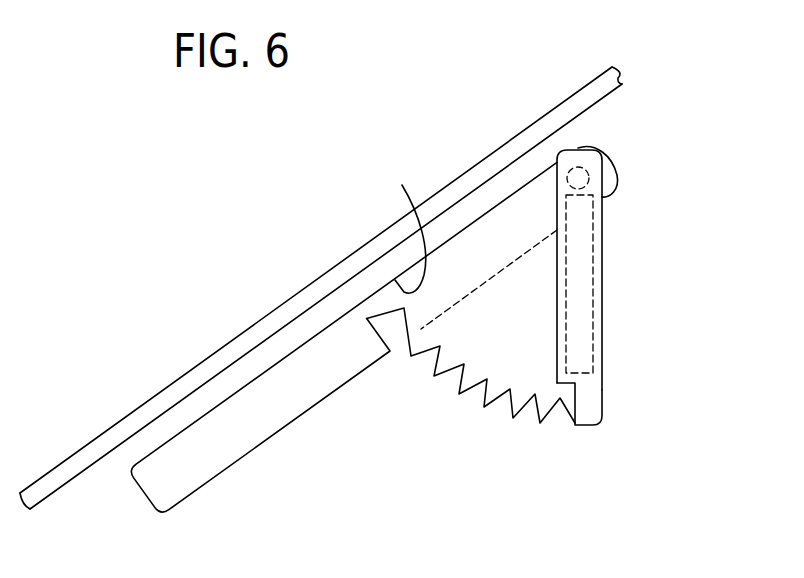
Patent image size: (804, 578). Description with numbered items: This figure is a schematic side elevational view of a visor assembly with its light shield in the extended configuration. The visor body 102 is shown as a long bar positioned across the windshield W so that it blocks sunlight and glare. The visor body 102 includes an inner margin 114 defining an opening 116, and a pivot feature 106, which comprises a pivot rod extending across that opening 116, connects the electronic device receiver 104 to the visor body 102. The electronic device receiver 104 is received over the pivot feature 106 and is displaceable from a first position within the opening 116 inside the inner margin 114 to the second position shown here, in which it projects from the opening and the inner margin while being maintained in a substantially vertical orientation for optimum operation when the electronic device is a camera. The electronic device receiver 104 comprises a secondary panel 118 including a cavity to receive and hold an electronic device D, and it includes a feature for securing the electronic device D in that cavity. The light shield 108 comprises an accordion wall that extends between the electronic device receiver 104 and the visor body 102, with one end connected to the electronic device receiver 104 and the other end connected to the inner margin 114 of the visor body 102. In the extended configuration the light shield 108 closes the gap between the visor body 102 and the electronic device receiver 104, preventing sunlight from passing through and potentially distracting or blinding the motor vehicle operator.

The windshield W is at (168, 388).
The visor body 102 is at (230, 468).
The electronic device receiver 104 is at (648, 328).
The pivot feature 106 is at (603, 167).
The light shield 108 is at (482, 397).
The inner margin 114 is at (397, 226).
The opening 116 is at (402, 277).
The secondary panel 118 is at (603, 398).
The electronic device D is at (594, 292).